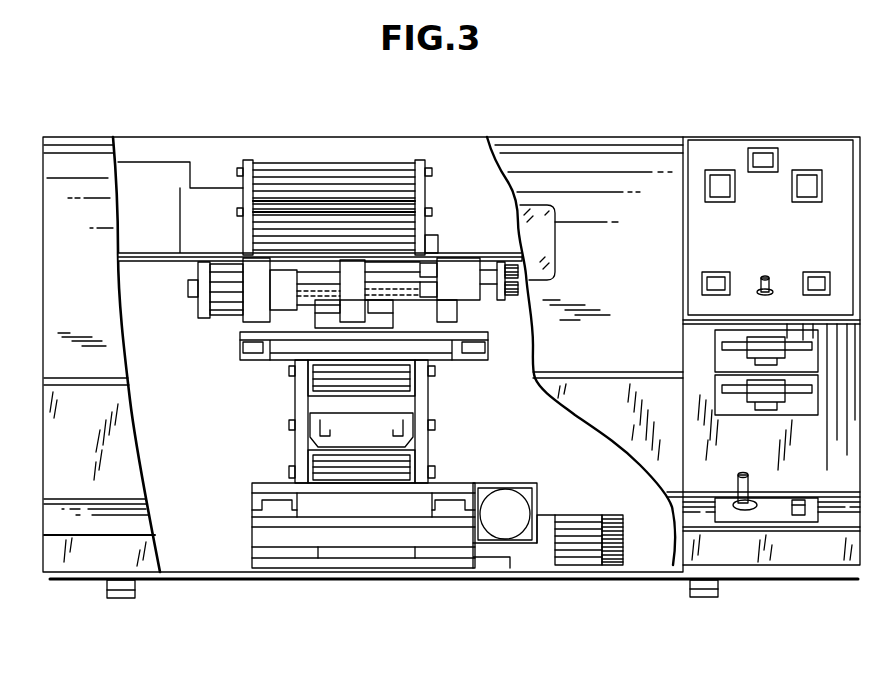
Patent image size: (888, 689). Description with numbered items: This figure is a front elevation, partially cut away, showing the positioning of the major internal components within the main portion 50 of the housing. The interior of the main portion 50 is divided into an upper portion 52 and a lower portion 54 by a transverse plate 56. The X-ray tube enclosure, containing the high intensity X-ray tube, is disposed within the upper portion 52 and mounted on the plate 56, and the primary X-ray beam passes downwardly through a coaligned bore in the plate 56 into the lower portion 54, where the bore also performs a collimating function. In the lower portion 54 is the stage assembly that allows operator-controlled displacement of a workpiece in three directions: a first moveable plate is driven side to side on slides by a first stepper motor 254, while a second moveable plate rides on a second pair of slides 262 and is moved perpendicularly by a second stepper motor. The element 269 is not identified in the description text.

The main portion 50 is at (312, 148).
The upper portion 52 is at (485, 201).
The lower portion 54 is at (498, 408).
The transverse plate 56 is at (492, 253).
The second pair of slides 262 is at (298, 506).
The fan 269 is at (503, 500).
The first stepper motor 254 is at (570, 516).